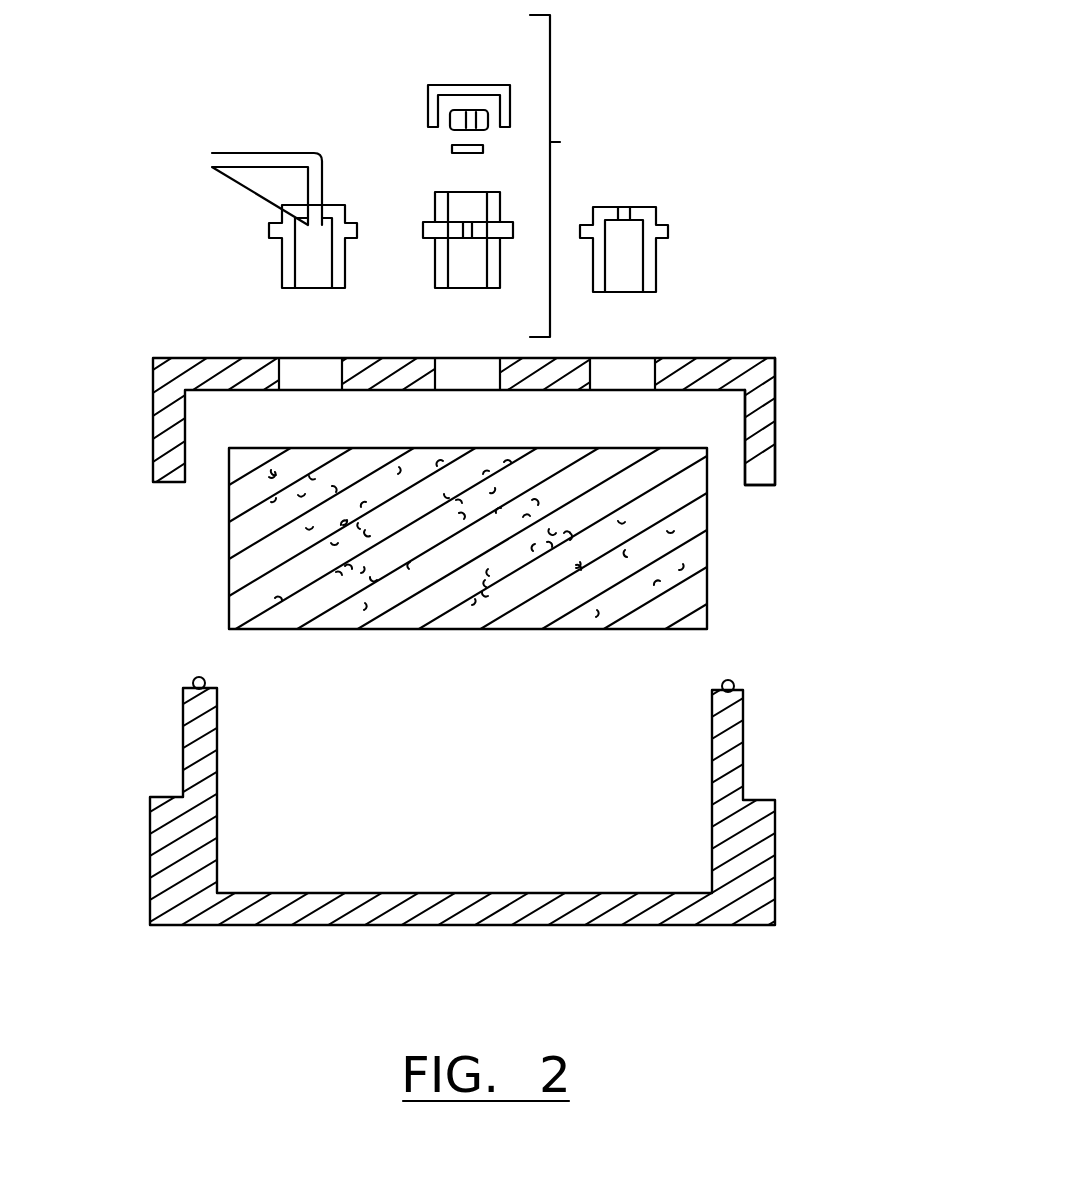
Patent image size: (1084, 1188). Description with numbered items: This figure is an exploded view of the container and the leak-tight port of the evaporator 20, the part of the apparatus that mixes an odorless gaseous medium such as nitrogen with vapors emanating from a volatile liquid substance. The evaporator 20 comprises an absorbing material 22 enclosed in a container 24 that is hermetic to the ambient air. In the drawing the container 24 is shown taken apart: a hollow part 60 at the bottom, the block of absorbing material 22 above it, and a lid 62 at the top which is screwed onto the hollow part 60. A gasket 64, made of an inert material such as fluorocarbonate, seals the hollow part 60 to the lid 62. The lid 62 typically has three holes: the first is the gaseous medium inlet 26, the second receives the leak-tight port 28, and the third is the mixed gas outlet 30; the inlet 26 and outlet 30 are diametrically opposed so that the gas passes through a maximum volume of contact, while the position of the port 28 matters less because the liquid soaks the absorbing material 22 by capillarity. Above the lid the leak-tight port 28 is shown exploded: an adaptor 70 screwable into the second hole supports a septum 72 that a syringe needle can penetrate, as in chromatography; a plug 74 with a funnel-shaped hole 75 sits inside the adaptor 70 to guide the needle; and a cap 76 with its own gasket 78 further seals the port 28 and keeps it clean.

The evaporator 20 is at (910, 183).
The absorbing material 22 is at (698, 588).
The container 24 is at (755, 348).
The gaseous medium inlet 26 is at (196, 160).
The leak-tight port 28 is at (565, 176).
The mixed gas outlet 30 is at (625, 207).
The hollow part 60 is at (765, 853).
The lid 62 is at (768, 397).
The gasket 64 is at (736, 683).
The adaptor 70 is at (444, 286).
The septum 72 is at (452, 148).
The plug 74 is at (488, 115).
The funnel-shaped hole 75 is at (468, 117).
The cap 76 is at (440, 87).
The gasket 78 is at (430, 127).